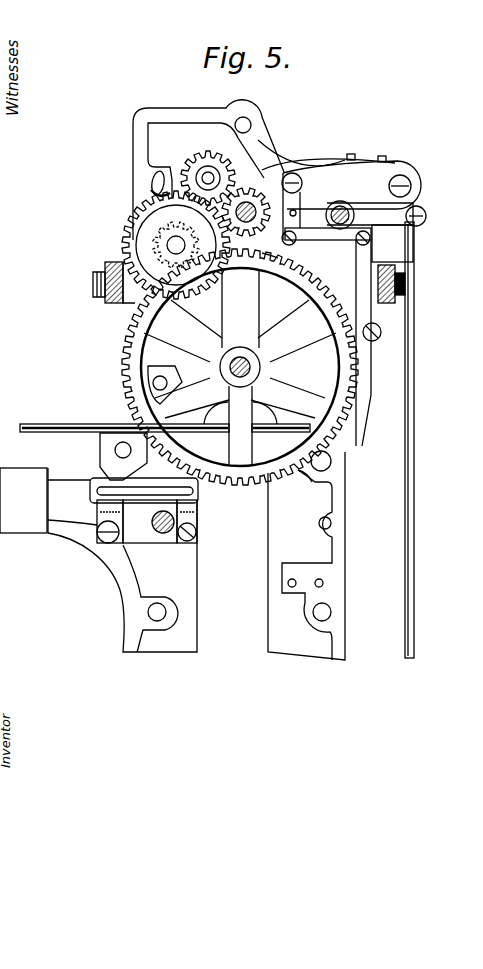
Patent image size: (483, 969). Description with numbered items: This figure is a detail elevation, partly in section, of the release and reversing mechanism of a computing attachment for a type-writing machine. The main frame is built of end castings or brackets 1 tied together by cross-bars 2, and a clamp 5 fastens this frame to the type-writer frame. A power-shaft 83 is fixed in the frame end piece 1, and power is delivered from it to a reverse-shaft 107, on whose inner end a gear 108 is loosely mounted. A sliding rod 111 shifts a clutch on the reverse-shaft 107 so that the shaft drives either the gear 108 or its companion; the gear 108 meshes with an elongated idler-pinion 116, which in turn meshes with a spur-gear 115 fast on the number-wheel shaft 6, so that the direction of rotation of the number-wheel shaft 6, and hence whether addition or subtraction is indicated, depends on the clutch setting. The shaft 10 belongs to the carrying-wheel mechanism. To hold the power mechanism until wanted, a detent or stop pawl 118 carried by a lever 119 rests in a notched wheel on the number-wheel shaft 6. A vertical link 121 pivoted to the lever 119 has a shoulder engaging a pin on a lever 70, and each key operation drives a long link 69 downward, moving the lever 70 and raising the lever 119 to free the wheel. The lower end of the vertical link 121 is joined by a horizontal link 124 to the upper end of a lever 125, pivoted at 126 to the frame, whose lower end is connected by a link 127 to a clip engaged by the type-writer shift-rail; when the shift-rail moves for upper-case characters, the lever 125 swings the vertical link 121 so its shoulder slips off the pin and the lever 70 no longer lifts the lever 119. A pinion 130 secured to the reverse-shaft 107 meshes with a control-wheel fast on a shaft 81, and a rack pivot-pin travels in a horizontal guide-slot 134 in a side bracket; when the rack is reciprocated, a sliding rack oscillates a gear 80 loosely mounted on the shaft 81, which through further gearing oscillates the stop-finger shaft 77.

The casting or bracket 1 is at (345, 558).
The cross-bar 2 is at (405, 260).
The clamp 5 is at (98, 560).
The number-wheel shaft 6 is at (259, 174).
The shaft 10 is at (347, 213).
The long link 69 is at (424, 440).
The lever 70 is at (383, 218).
The stop-finger shaft 77 is at (163, 534).
The gear 80 is at (226, 367).
The shaft 81 is at (251, 366).
The power-shaft 83 is at (315, 472).
The reverse-shaft 107 is at (168, 243).
The gear 108 is at (130, 259).
The sliding rod 111 is at (150, 181).
The spur-gear 115 is at (270, 248).
The elongated idler-pinion 116 is at (203, 160).
The detent or stop pawl 118 is at (250, 203).
The lever 119 is at (318, 180).
The vertical link 121 is at (280, 173).
The horizontal link 124 is at (302, 240).
The lever 125 is at (367, 256).
The pivot 126 is at (378, 329).
The link 127 is at (64, 425).
The pinion 130 is at (162, 223).
The horizontal guide-slot 134 is at (140, 490).